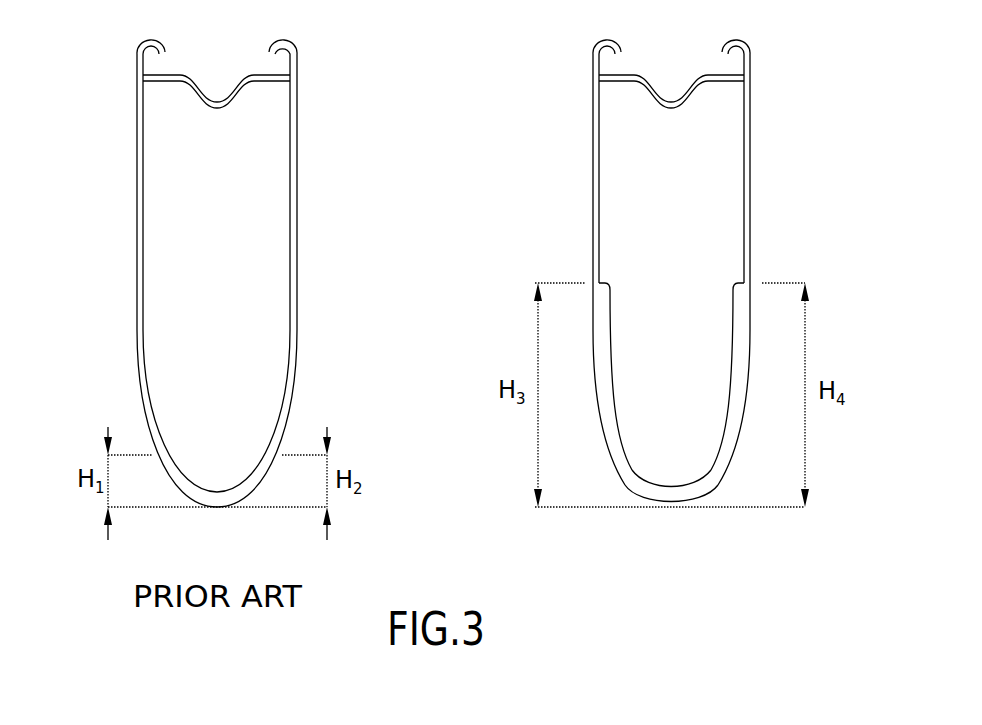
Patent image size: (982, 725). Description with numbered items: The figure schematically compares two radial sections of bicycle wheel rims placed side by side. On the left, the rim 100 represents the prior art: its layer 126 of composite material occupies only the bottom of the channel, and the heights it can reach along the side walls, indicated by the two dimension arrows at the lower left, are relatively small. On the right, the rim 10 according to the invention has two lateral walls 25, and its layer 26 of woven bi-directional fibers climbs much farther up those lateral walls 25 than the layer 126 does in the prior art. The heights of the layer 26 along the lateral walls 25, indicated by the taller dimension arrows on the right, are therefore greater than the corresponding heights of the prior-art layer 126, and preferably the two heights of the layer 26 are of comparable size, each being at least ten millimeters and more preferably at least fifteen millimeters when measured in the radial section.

The rim 100 is at (249, 273).
The layer of composite material 126 is at (240, 482).
The rim 10 is at (647, 311).
The lateral walls 25 is at (597, 230).
The layer of woven bi-directional fibers 26 is at (672, 490).